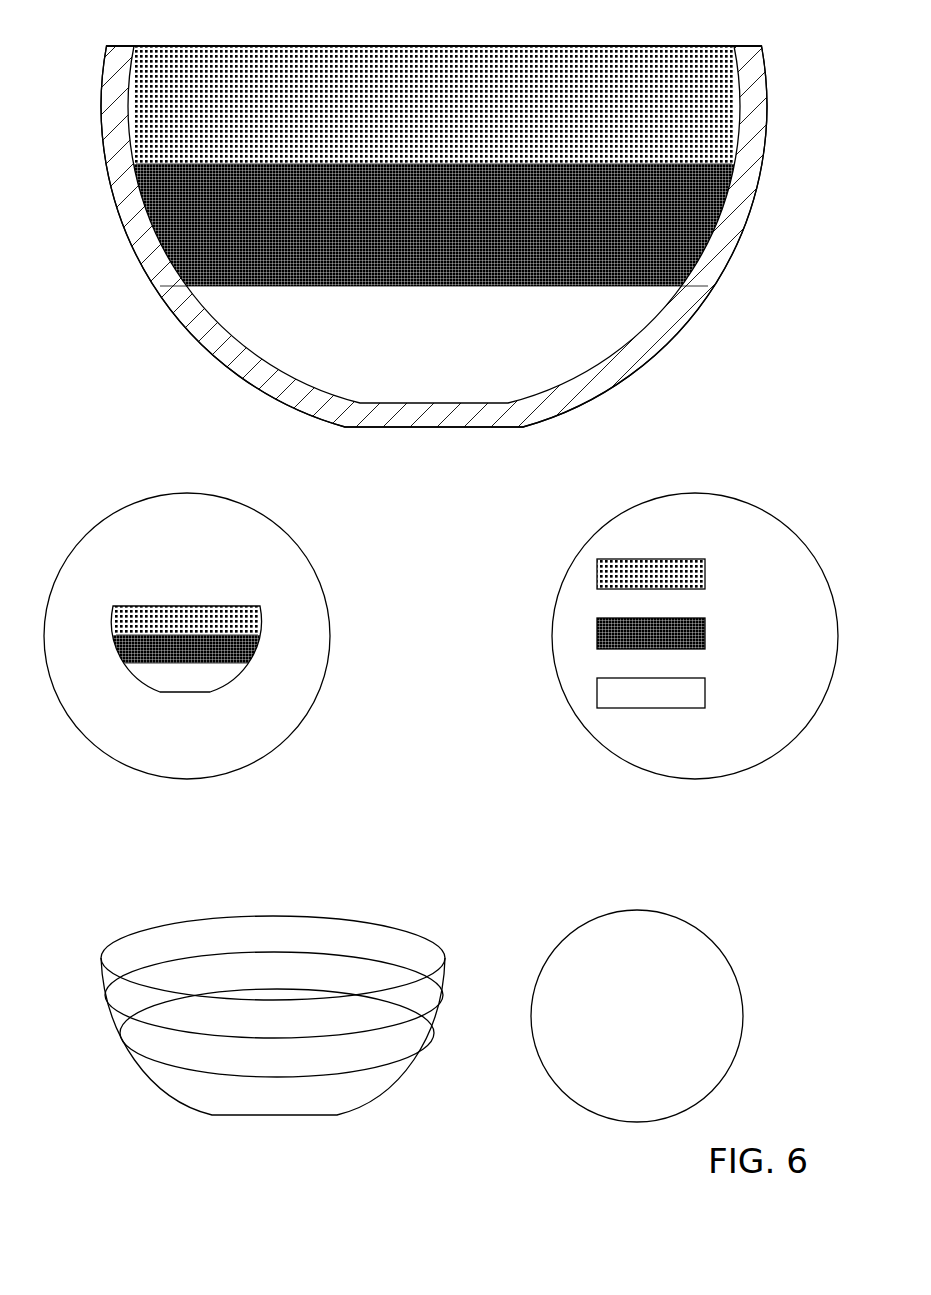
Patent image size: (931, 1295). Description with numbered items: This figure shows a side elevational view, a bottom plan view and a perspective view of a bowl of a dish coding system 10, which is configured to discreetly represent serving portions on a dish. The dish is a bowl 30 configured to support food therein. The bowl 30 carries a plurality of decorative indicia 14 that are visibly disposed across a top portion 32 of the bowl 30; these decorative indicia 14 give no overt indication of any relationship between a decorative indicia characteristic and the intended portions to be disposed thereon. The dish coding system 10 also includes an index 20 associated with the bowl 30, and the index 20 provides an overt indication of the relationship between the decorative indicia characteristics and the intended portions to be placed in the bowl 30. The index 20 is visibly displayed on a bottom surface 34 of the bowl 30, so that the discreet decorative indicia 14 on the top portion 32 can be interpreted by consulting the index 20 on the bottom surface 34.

The dish coding system 10 is at (817, 112).
The decorative indicia 14 is at (228, 323).
The index 20 is at (196, 595).
The bowl 30 is at (752, 192).
The top portion 32 is at (442, 180).
The bottom surface 34 is at (201, 746).